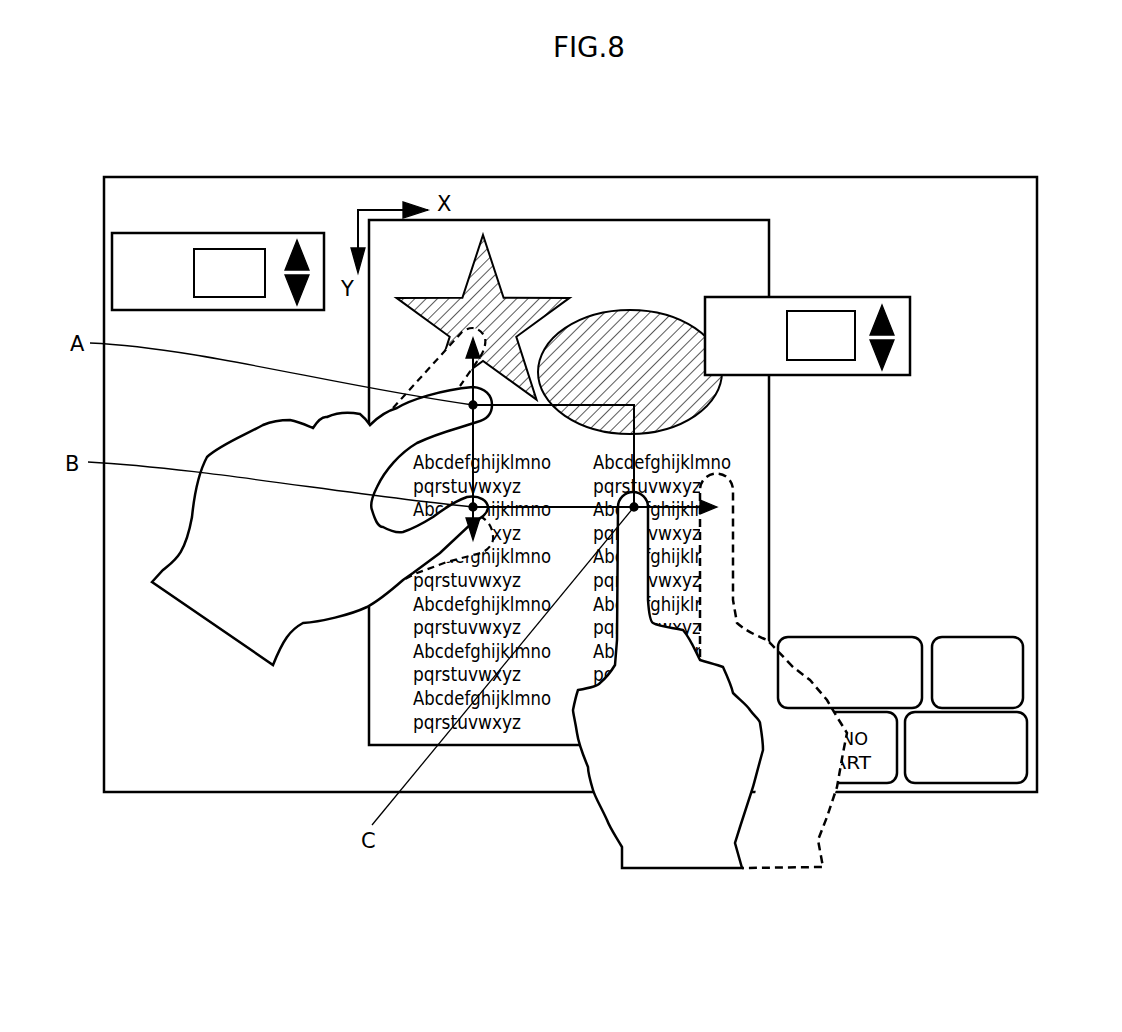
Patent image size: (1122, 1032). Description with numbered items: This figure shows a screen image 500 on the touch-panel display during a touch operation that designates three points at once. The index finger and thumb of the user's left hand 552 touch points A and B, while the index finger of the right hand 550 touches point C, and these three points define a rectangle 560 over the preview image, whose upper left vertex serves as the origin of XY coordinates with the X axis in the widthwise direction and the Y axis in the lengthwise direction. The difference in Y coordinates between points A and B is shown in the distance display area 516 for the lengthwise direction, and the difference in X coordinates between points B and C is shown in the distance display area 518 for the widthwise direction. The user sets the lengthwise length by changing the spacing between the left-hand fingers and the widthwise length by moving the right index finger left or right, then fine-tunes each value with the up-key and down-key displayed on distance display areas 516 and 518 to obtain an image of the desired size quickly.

The screen image 500 is at (998, 228).
The distance display area for the lengthwise direction 516 is at (273, 233).
The distance display area for the widthwise direction 518 is at (855, 297).
The right hand 550 is at (663, 852).
The left hand 552 is at (182, 573).
The rectangle 560 is at (508, 405).